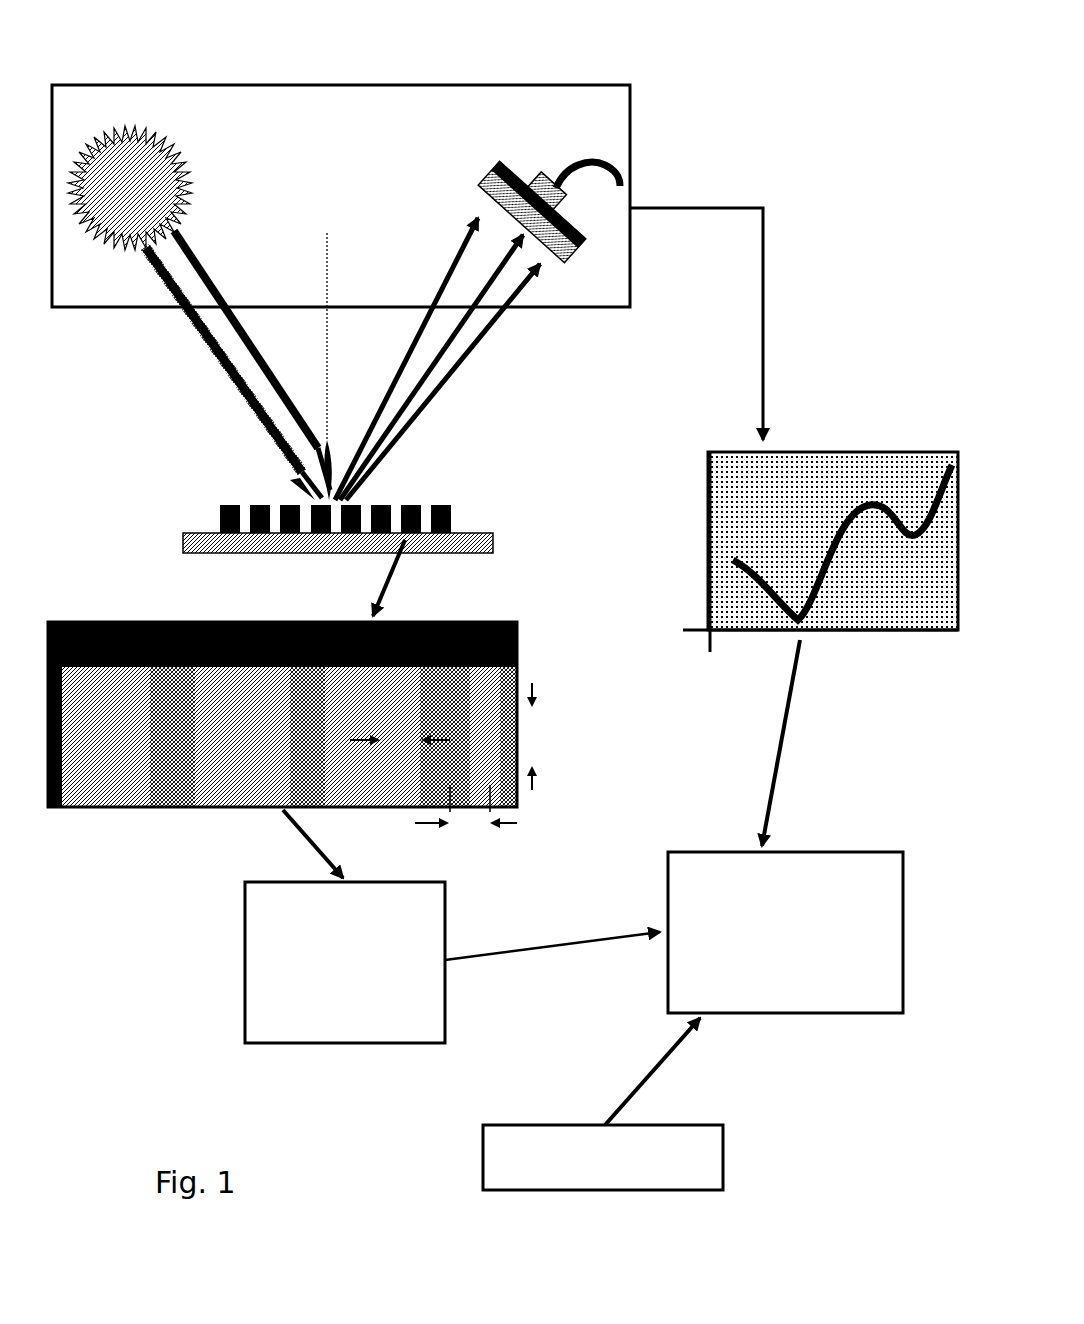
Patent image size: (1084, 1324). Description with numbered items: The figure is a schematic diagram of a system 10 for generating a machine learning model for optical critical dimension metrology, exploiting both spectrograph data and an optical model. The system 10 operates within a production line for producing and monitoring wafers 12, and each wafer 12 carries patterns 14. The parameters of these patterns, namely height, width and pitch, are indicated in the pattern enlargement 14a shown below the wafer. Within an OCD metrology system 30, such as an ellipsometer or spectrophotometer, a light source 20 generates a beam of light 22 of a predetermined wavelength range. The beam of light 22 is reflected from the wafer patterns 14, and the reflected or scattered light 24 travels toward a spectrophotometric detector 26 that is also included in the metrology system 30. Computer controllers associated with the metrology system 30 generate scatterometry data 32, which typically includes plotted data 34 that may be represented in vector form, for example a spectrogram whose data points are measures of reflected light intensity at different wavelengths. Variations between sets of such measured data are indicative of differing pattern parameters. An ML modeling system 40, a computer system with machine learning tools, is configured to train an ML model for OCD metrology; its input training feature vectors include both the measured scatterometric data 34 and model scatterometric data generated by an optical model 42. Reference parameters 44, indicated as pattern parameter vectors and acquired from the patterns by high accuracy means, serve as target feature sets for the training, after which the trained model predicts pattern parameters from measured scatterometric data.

The system 10 is at (806, 86).
The wafer 12 is at (200, 532).
The patterns 14 is at (432, 494).
The pattern enlargement 14a is at (510, 622).
The light source 20 is at (190, 178).
The beam of light 22 is at (202, 337).
The reflected light 24 is at (488, 372).
The spectrophotometric detector 26 is at (528, 180).
The OCD metrology system 30 is at (600, 85).
The scatterometry data 32 is at (820, 513).
The plotted data 34 is at (852, 551).
The ML modeling system 40 is at (818, 852).
The optical model 42 is at (524, 1125).
The reference parameters 44 is at (245, 930).